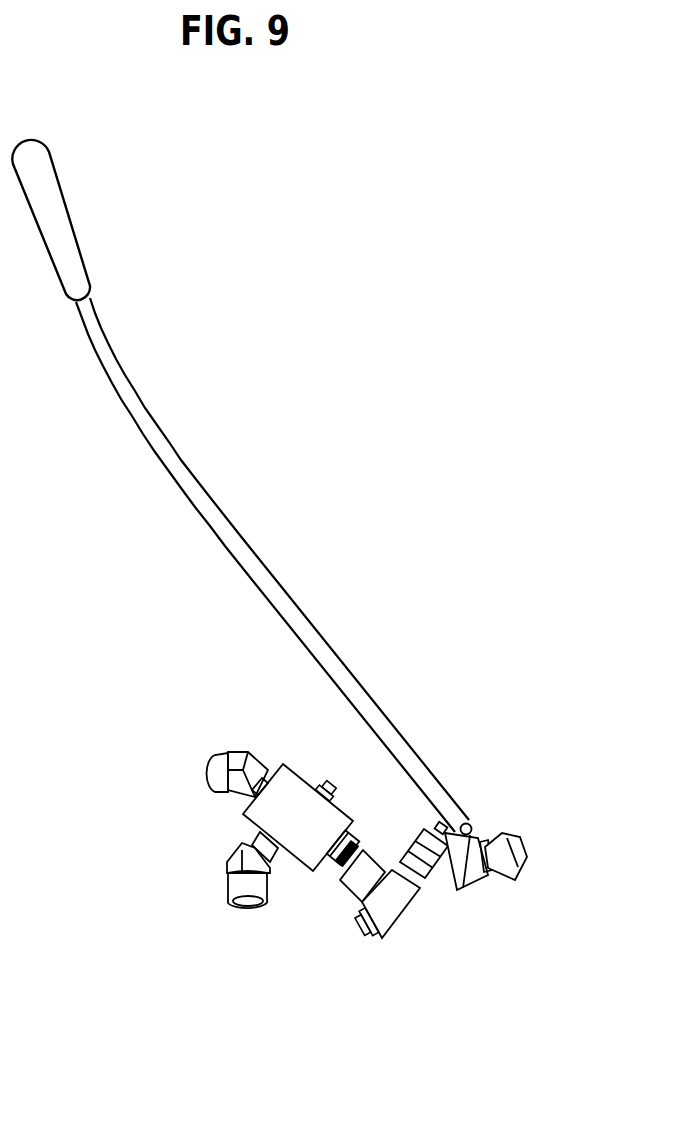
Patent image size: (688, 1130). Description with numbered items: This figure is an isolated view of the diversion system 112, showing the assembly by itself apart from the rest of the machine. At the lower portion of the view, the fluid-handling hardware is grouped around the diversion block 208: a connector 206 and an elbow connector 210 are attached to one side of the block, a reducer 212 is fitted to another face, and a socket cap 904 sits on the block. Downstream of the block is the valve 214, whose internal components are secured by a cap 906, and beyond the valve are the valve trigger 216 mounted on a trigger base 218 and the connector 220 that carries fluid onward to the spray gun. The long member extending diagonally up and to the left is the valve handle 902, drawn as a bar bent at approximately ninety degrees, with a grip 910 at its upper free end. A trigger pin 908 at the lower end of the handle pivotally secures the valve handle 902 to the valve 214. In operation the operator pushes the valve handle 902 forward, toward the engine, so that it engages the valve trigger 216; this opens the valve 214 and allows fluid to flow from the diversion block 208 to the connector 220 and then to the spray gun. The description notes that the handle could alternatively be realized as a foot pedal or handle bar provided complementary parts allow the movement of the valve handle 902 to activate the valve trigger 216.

The diversion system 112 is at (462, 378).
The connector 206 is at (228, 885).
The diversion block 208 is at (242, 820).
The elbow connector 210 is at (205, 770).
The reducer 212 is at (322, 868).
The valve 214 is at (400, 928).
The valve trigger 216 is at (442, 829).
The trigger base 218 is at (453, 892).
The connector 220 is at (504, 881).
The valve handle 902 is at (245, 543).
The socket cap 904 is at (316, 780).
The cap 906 is at (357, 924).
The trigger pin 908 is at (477, 828).
The grip 910 is at (62, 188).